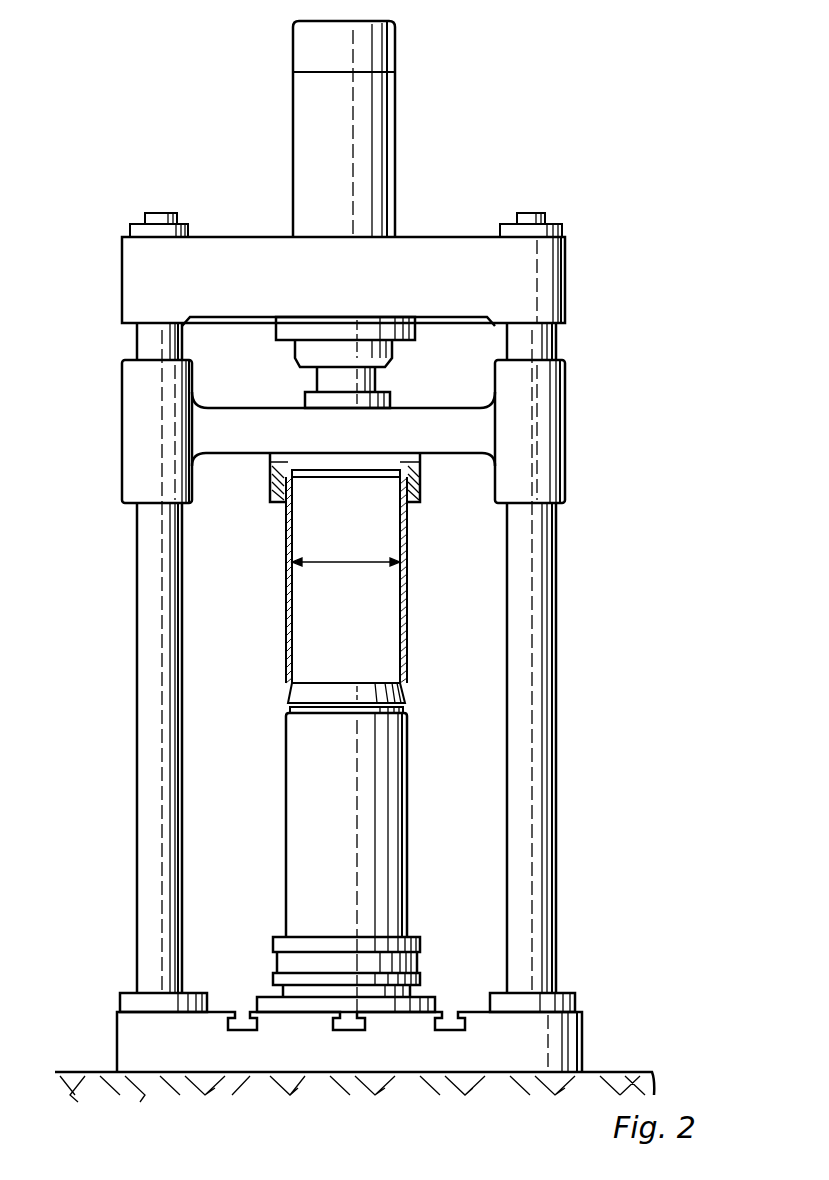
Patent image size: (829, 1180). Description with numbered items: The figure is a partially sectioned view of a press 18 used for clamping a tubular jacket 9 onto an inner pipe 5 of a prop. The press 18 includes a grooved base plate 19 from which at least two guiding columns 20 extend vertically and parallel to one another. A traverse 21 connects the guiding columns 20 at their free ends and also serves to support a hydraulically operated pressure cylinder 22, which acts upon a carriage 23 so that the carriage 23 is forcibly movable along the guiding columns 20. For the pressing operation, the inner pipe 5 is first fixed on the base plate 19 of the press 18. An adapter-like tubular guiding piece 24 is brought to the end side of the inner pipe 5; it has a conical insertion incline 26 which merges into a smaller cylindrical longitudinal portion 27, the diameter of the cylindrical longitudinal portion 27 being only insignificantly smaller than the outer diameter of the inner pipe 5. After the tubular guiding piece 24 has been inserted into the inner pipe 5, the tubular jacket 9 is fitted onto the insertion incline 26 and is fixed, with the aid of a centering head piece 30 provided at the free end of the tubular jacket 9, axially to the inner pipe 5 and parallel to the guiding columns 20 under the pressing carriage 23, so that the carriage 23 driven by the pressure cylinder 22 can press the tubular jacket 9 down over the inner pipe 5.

The inner pipe 5 is at (385, 823).
The tubular jacket 9 is at (405, 562).
The press 18 is at (563, 585).
The grooved base plate 19 is at (543, 1037).
The guiding columns 20 is at (163, 640).
The traverse 21 is at (543, 275).
The hydraulically operated pressure cylinder 22 is at (375, 118).
The carriage 23 is at (553, 425).
The tubular guiding piece 24 is at (326, 683).
The conical insertion incline 26 is at (387, 695).
The cylindrical longitudinal portion 27 is at (327, 713).
The centering head piece 30 is at (282, 475).